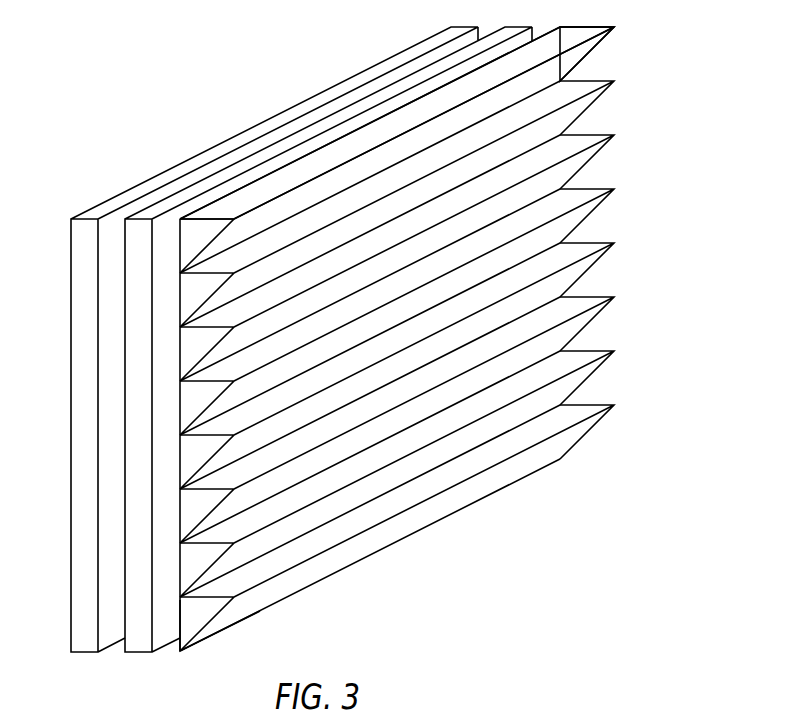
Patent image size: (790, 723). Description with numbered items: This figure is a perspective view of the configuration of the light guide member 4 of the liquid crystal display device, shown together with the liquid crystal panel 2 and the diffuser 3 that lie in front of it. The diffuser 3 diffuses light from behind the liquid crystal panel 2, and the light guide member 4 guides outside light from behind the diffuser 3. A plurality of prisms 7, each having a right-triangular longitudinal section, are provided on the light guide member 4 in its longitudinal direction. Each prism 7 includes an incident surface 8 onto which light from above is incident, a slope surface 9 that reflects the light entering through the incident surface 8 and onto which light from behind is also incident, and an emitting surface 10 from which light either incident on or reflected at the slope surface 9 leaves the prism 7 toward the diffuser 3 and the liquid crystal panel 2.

The liquid crystal panel 2 is at (72, 231).
The diffuser 3 is at (147, 212).
The light guide member 4 is at (371, 336).
The prism 7 is at (601, 26).
The incident surface 8 is at (573, 30).
The slope surface 9 is at (583, 53).
The emitting surface 10 is at (182, 623).